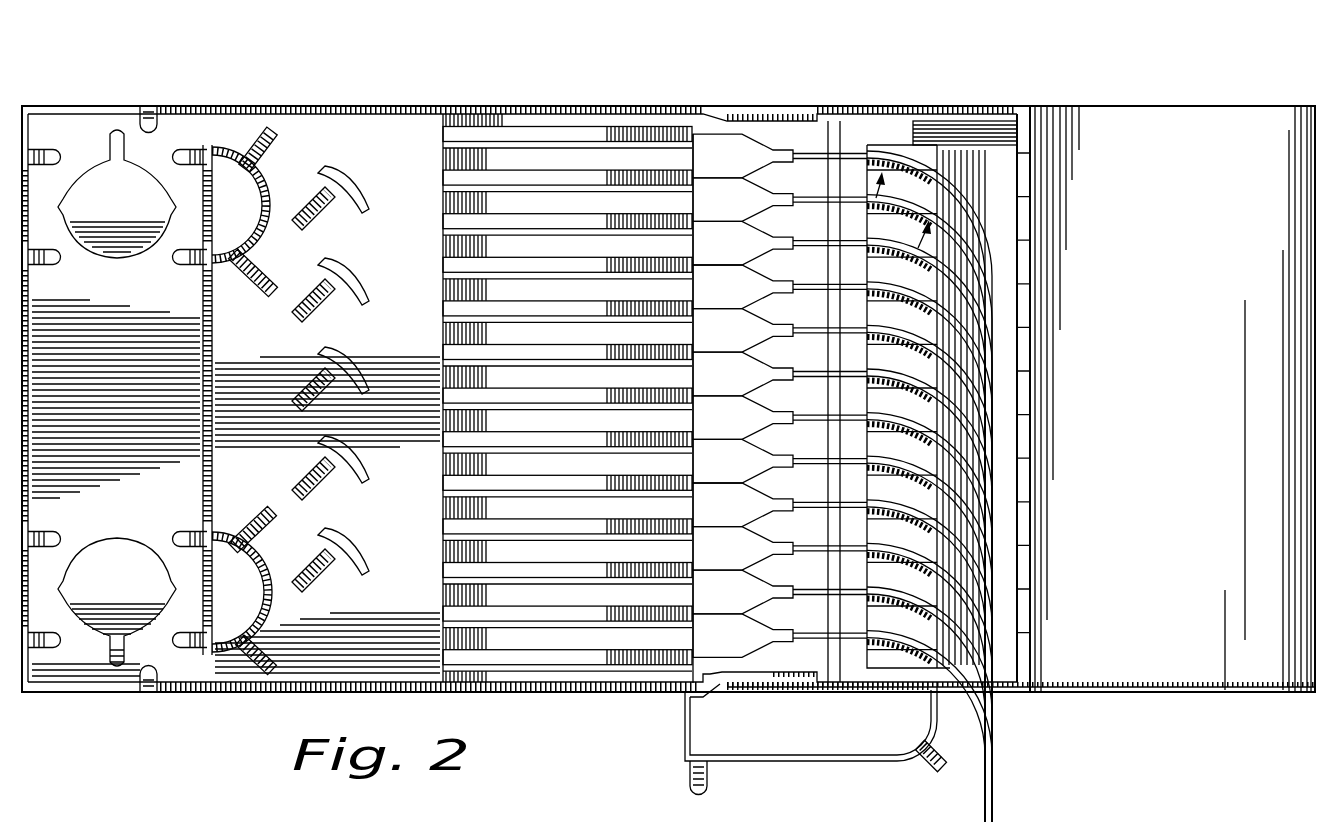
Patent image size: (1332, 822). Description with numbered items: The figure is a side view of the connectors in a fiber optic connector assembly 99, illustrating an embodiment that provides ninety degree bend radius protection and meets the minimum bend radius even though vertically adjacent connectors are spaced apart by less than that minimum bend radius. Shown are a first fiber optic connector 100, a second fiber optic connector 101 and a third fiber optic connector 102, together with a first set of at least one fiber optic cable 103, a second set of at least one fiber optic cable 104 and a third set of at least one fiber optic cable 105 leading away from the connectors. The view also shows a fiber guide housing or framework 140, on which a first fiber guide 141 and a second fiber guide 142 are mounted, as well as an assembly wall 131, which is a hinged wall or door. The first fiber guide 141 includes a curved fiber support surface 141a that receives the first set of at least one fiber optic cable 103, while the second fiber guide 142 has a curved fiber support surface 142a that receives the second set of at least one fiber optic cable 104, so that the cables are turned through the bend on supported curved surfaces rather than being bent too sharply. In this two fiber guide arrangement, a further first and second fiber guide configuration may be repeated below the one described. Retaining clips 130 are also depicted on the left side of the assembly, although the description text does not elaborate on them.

The fiber optic connector assembly 99 is at (751, 84).
The first fiber optic connector 100 is at (740, 170).
The second fiber optic connector 101 is at (740, 213).
The third fiber optic connector 102 is at (740, 257).
The first set of at least one fiber optic cable 103 is at (848, 161).
The second set of at least one fiber optic cable 104 is at (848, 204).
The third set of at least one fiber optic cable 105 is at (848, 248).
The retaining clip 130 is at (340, 283).
The assembly wall 131 is at (1177, 420).
The fiber guide housing or framework 140 is at (972, 198).
The first fiber guide 141 is at (878, 505).
The second fiber guide 142 is at (878, 548).
The curved fiber support surface 141a is at (900, 146).
The curved fiber support surface 142a is at (1004, 261).